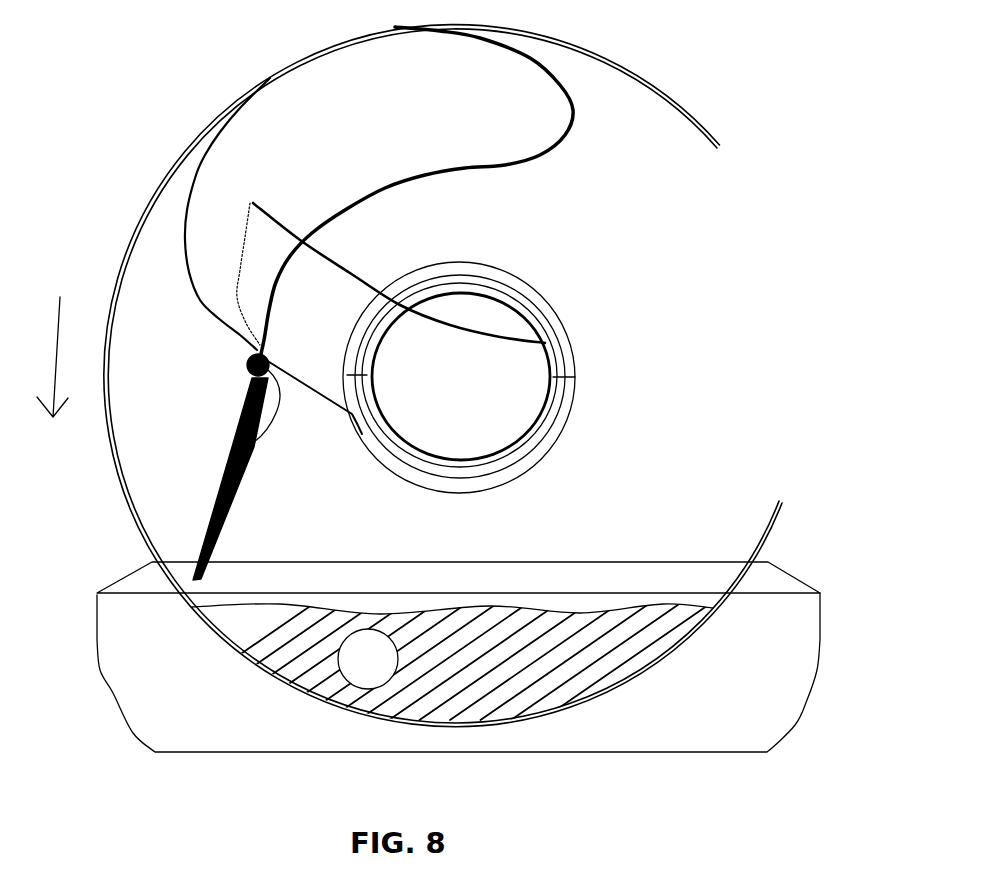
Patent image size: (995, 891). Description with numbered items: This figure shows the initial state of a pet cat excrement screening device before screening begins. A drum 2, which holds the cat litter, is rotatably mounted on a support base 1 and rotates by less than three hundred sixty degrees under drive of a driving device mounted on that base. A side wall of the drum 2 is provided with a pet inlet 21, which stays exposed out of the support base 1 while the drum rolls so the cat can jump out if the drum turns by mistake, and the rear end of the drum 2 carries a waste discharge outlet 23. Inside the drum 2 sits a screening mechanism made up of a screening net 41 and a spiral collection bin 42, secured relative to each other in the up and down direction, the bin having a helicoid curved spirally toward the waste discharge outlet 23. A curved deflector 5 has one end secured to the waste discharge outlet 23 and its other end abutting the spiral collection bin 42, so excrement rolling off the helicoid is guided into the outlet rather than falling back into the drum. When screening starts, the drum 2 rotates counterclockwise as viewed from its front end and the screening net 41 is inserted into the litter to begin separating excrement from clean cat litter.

The support base 1 is at (778, 687).
The drum 2 is at (125, 270).
The deflector 5 is at (323, 288).
The pet inlet 21 is at (757, 403).
The waste discharge outlet 23 is at (485, 310).
The screening net 41 is at (212, 497).
The spiral collection bin 42 is at (310, 110).